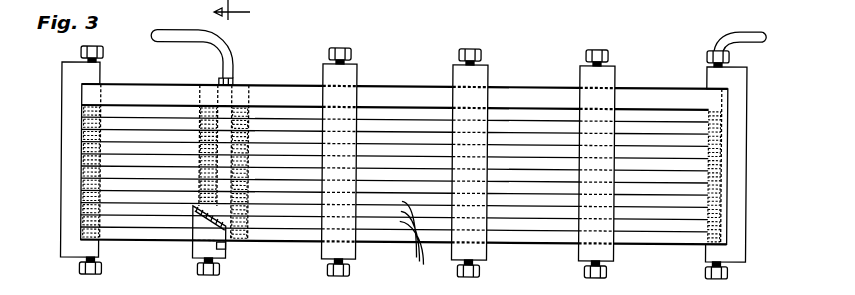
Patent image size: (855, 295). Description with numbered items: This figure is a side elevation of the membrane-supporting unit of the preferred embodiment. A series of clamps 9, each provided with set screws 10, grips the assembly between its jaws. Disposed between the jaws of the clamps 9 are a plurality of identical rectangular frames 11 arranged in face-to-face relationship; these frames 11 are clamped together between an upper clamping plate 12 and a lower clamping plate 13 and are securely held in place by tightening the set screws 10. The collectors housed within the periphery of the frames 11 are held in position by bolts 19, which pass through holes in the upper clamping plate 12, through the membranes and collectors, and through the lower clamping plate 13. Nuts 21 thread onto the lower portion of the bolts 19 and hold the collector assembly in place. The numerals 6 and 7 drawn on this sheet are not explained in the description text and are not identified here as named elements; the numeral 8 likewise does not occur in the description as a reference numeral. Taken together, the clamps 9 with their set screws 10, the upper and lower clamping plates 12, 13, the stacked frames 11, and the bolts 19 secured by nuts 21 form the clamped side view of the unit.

The section line for FIG. 6 is at (239, 11).
The outlet tube / section line for FIG. 7 is at (753, 35).
The inlet tube 8 is at (153, 33).
The clamps 9 is at (62, 172).
The set screws 10 is at (345, 48).
The rectangular frames 11 is at (415, 241).
The upper clamping plate 12 is at (130, 88).
The lower clamping plate 13 is at (143, 233).
The bolts 19 is at (237, 82).
The nuts 21 is at (229, 243).